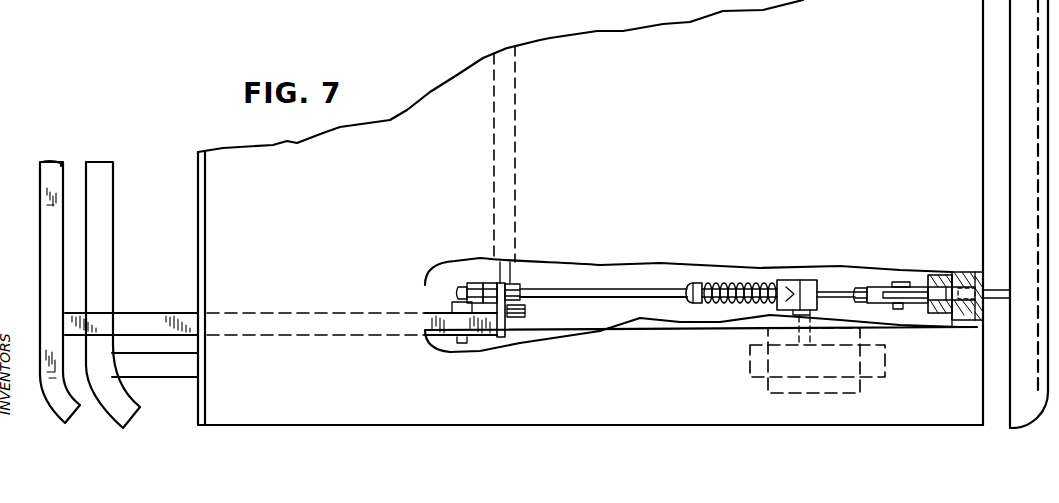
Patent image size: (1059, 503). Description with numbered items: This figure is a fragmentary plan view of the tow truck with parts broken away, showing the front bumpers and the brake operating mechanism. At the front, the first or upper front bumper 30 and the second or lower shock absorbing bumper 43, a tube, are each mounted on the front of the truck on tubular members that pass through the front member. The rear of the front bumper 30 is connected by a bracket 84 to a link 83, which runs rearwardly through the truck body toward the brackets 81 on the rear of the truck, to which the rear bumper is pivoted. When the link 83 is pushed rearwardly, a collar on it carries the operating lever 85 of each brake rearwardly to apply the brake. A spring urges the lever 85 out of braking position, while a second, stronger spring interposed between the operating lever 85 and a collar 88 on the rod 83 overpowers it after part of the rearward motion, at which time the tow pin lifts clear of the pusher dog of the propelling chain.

The upper front bumper 30 is at (61, 166).
The lower bumper 43 is at (100, 170).
The link 83 is at (590, 290).
The bracket 84 is at (507, 333).
The operating lever 85 is at (800, 280).
The collar 88 is at (695, 283).
The brackets 81 is at (950, 280).